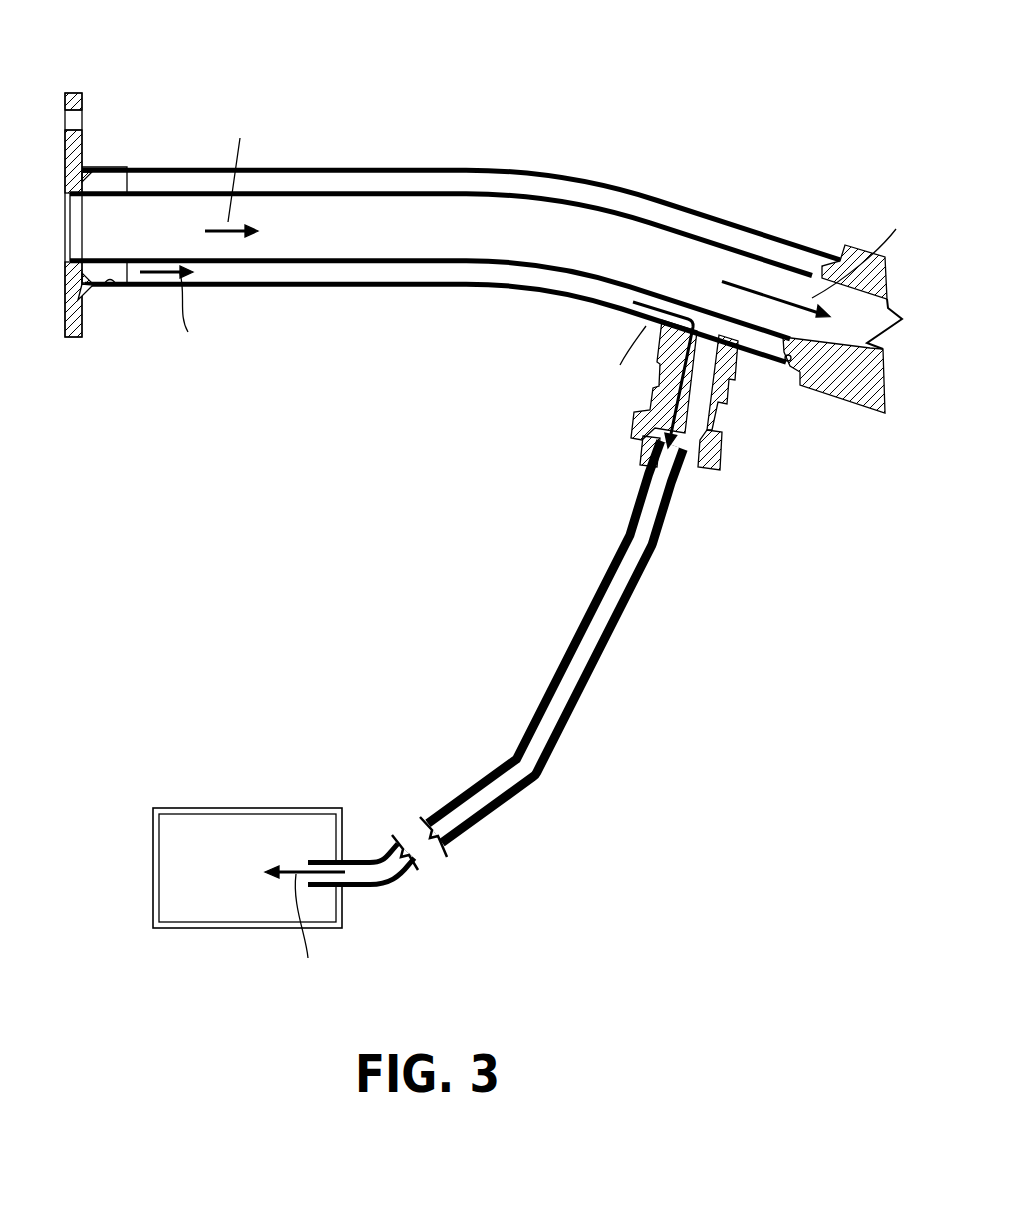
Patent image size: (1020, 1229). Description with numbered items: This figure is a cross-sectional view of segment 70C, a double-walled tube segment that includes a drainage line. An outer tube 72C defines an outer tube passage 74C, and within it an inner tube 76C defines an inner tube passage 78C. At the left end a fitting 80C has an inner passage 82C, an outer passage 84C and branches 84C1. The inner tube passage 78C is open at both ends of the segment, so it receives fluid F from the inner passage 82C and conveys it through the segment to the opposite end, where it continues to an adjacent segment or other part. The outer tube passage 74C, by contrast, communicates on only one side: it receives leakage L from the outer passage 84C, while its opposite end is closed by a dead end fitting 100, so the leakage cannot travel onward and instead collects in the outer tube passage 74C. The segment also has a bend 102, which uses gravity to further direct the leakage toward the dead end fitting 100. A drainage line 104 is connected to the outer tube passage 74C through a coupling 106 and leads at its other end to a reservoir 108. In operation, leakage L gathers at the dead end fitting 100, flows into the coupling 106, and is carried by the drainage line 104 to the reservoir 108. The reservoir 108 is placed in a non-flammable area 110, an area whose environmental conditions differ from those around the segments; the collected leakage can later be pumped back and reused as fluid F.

The segment 70C is at (524, 160).
The outer tube 72C is at (259, 287).
The outer tube passage 74C is at (314, 274).
The inner tube 76C is at (398, 264).
The inner tube passage 78C is at (457, 249).
The fitting 80C is at (67, 339).
The inner passage 82C is at (72, 238).
The outer passage 84C is at (112, 286).
The branches 84C1 is at (86, 293).
The dead end fitting 100 is at (767, 333).
The bend 102 is at (745, 218).
The drainage line 104 is at (648, 578).
The coupling 106 is at (712, 456).
The reservoir 108 is at (218, 807).
The non-flammable area 110 is at (293, 786).